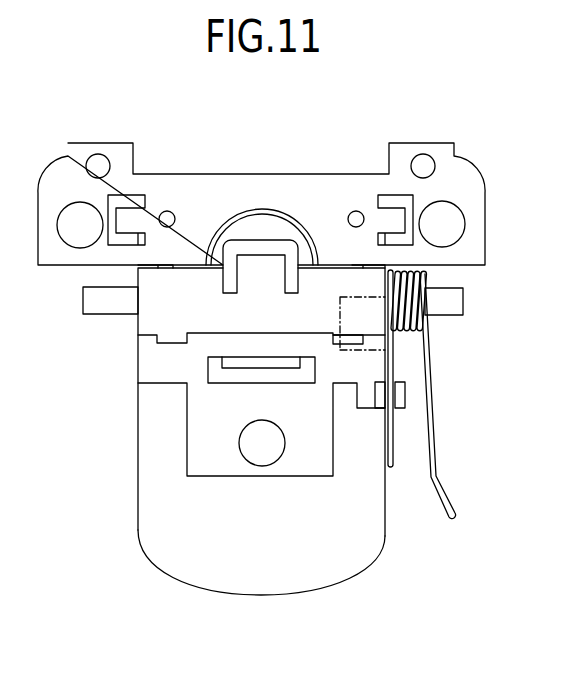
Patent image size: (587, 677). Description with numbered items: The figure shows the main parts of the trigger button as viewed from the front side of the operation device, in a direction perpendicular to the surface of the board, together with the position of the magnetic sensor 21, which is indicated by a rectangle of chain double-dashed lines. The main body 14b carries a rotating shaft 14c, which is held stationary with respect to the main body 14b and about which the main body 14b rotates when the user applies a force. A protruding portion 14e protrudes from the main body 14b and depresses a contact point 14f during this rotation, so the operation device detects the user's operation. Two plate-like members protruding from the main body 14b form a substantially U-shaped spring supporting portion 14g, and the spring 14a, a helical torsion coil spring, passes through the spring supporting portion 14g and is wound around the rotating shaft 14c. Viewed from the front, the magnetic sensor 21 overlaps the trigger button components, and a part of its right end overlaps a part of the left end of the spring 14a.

The spring 14a is at (435, 457).
The main body 14b is at (322, 592).
The rotating shaft 14c is at (463, 302).
The protruding portion 14e is at (244, 249).
The contact point 14f is at (274, 225).
The spring supporting portion 14g is at (405, 398).
The magnetic sensor 21 is at (377, 355).